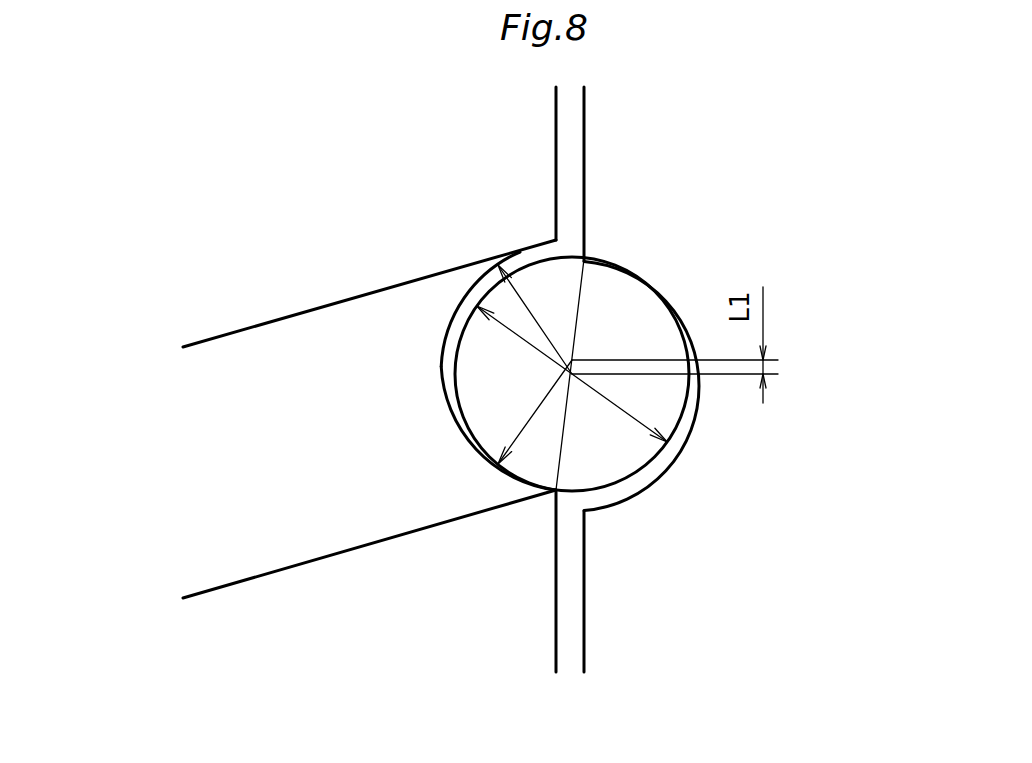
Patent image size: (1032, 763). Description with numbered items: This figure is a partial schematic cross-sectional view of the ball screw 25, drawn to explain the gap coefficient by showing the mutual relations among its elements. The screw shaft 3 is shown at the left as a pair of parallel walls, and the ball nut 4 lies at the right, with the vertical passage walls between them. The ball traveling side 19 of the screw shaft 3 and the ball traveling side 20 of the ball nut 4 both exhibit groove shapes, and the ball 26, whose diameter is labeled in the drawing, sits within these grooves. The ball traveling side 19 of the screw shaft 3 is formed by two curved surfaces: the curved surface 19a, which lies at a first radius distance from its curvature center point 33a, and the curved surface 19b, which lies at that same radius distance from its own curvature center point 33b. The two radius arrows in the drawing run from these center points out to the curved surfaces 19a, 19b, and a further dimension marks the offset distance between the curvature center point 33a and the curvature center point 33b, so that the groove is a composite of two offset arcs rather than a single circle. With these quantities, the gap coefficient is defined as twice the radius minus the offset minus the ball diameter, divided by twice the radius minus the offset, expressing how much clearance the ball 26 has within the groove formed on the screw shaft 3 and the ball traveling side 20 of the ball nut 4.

The screw shaft 3 is at (282, 282).
The ball nut 4 is at (843, 256).
The ball traveling side 19 is at (403, 399).
The curved surface 19a is at (443, 273).
The curved surface 19b is at (473, 450).
The ball traveling side 20 is at (653, 480).
The ball screw 25 is at (120, 132).
The ball 26 is at (610, 308).
The curvature center point 33a is at (551, 490).
The curvature center point 33b is at (585, 262).